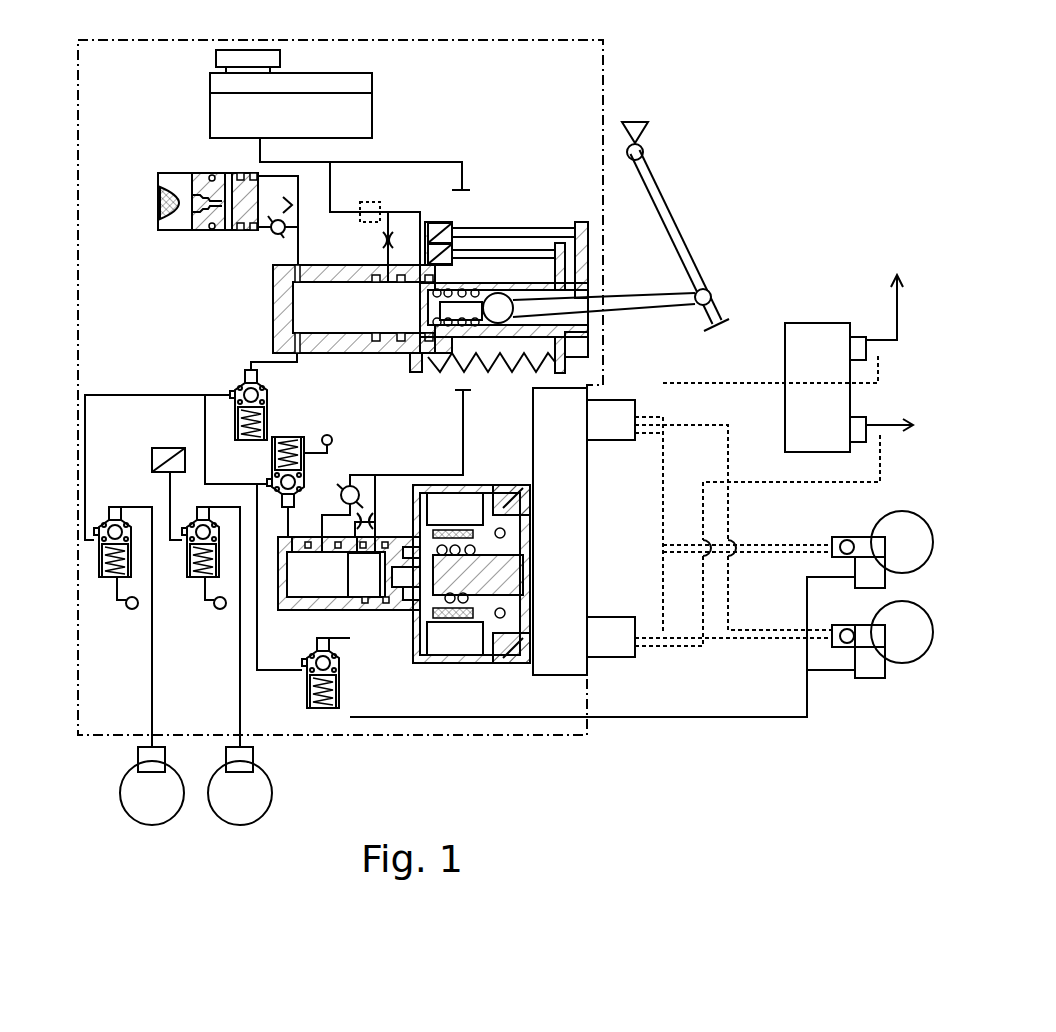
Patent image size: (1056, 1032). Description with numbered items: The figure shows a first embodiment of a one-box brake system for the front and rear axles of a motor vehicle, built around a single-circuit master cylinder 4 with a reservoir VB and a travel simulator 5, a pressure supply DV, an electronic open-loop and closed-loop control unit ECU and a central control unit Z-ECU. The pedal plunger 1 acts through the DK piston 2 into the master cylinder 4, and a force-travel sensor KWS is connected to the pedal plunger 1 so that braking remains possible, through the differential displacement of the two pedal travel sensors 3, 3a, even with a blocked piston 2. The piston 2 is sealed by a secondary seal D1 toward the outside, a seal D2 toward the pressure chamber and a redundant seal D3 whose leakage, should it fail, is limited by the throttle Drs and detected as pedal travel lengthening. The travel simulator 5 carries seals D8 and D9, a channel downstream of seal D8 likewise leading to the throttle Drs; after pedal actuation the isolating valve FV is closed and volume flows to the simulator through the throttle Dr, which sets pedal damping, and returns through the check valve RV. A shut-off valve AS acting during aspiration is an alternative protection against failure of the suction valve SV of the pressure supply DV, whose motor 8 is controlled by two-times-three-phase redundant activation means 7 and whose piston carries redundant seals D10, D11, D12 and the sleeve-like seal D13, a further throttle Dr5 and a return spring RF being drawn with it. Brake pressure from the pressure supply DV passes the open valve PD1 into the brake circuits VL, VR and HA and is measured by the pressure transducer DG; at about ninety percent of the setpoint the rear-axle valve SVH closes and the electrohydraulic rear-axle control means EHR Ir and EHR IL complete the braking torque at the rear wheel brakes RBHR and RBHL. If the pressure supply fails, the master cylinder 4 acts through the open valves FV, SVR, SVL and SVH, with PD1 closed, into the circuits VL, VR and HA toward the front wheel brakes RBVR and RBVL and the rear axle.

The pedal plunger 1 is at (637, 300).
The piston DK 2 is at (562, 282).
The pedal travel sensor 3 is at (515, 233).
The pedal travel sensor 3a is at (535, 255).
The 1-circuit master cylinder 4 is at (313, 275).
The travel simulator 5 is at (228, 232).
The 2×3-phase redundant activation means 7 is at (508, 502).
The motor 8 is at (478, 665).
The reservoir VB is at (318, 118).
The shut-off valve AS is at (370, 202).
The throttle Dr is at (314, 216).
The throttle for redundant seal Drs is at (393, 236).
The force-travel sensor KWS is at (465, 290).
The check valve RV is at (270, 232).
The isolating valve FV is at (240, 383).
The pressure transducer DG is at (165, 448).
The valve PD1 is at (267, 460).
The suction valve SV is at (348, 485).
The throttle Dr5 is at (365, 512).
The secondary seal D1 is at (425, 354).
The seal D2 is at (397, 354).
The seal D3 is at (372, 354).
The seal D8 is at (240, 176).
The seal D9 is at (210, 176).
The piston seal D10 is at (389, 603).
The piston seal D11 is at (364, 603).
The piston seal D12 is at (338, 548).
The sleeve-like seal D13 is at (308, 548).
The return spring RF is at (485, 372).
The pressure supply DV is at (300, 605).
The electronic open-loop and closed-loop control unit ECU is at (580, 502).
The central control unit Z-ECU is at (815, 337).
The electrohydraulic rear-axle control means EHR Ir is at (866, 541).
The electrohydraulic rear-axle control means EHR IL is at (870, 672).
The wheel brake rear right RBHR is at (912, 537).
The wheel brake rear left RBHL is at (912, 633).
The shut-off valve SVR is at (110, 592).
The shut-off valve SVL is at (200, 592).
The shut-off valve SVH is at (327, 720).
The brake circuit VR is at (150, 680).
The brake circuit VL is at (238, 672).
The wheel brake front right RBVR is at (138, 810).
The wheel brake front left RBVL is at (238, 807).
The rear axle brake circuit HA is at (430, 718).